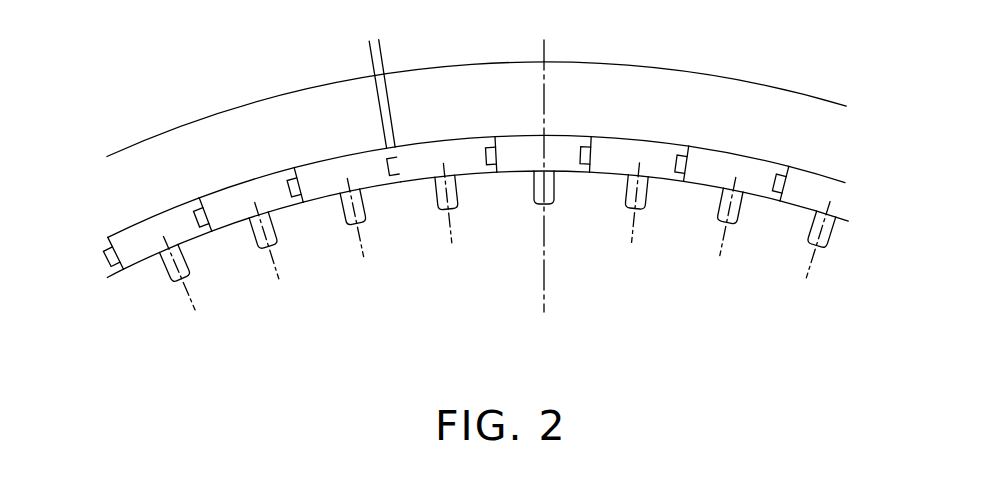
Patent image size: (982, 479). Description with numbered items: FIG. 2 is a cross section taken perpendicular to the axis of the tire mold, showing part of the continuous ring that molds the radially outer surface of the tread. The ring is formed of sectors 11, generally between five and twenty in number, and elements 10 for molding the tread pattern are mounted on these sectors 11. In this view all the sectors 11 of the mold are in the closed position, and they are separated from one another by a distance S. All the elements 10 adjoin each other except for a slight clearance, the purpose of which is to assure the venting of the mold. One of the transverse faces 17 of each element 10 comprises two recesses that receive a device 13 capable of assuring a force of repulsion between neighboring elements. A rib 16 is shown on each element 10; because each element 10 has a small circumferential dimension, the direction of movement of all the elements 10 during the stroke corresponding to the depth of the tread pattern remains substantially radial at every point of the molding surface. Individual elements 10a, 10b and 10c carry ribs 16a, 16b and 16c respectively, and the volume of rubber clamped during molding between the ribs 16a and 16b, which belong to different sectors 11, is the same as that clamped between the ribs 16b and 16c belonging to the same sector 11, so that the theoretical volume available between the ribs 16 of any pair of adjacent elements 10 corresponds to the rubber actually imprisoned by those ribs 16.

The element 10 is at (233, 225).
The element 10a is at (383, 185).
The element 10b is at (565, 160).
The element 10c is at (668, 163).
The sector 11 is at (338, 112).
The device 13 is at (122, 270).
The rib 16 is at (268, 243).
The rib 16a is at (362, 222).
The rib 16b is at (455, 207).
The rib 16c is at (548, 205).
The transverse face 17 is at (212, 231).
The distance S is at (350, 52).